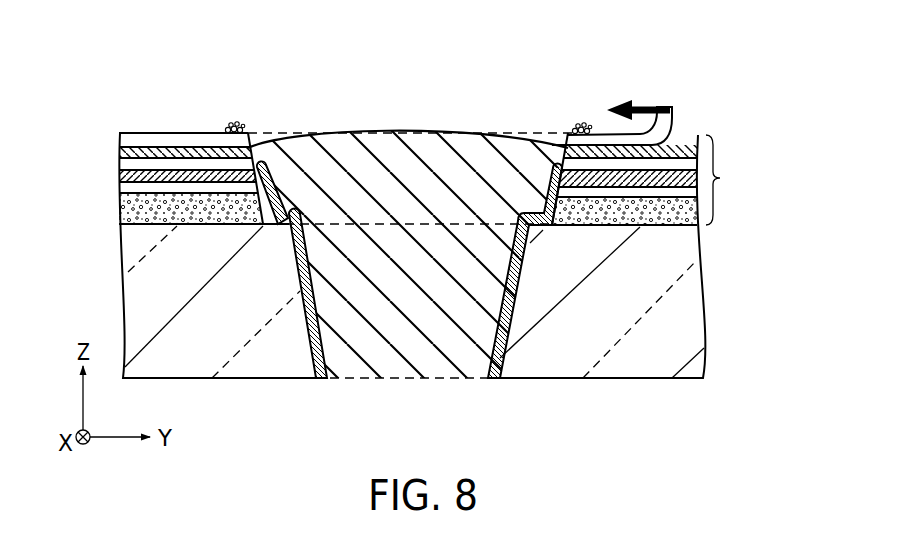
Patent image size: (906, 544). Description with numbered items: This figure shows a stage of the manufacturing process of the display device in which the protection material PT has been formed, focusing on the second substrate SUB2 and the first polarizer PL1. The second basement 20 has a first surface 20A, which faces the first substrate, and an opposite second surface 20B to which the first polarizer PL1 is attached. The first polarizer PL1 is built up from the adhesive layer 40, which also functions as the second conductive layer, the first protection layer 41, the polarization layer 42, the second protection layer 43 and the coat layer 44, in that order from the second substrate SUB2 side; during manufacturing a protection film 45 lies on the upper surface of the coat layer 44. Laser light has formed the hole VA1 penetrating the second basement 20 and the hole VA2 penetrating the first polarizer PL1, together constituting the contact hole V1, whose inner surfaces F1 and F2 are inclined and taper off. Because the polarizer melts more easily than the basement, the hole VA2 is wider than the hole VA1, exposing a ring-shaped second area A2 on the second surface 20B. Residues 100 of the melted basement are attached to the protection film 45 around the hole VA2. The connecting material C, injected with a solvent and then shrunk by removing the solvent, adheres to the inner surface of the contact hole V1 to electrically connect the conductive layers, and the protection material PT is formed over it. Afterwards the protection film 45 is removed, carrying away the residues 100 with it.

The second basement 20 is at (701, 291).
The second substrate SUB2 is at (713, 357).
The first surface 20A is at (229, 383).
The second surface 20B is at (190, 215).
The adhesive layer 40 is at (119, 207).
The first protection layer 41 is at (119, 189).
The polarization layer 42 is at (121, 176).
The second protection layer 43 is at (121, 164).
The coat layer 44 is at (123, 152).
The protection film 45 is at (125, 139).
The residues 100 is at (580, 127).
The first polarizer PL1 is at (733, 180).
The contact hole V1 is at (375, 126).
The hole (second hole) VA2 is at (400, 172).
The hole (first hole) VA1 is at (403, 358).
The protection material PT is at (497, 148).
The inner surface of hole VA2 F2 is at (266, 163).
The inner surface of hole VA1 F1 is at (304, 277).
The connecting material C is at (324, 340).
The second area A2 is at (292, 212).